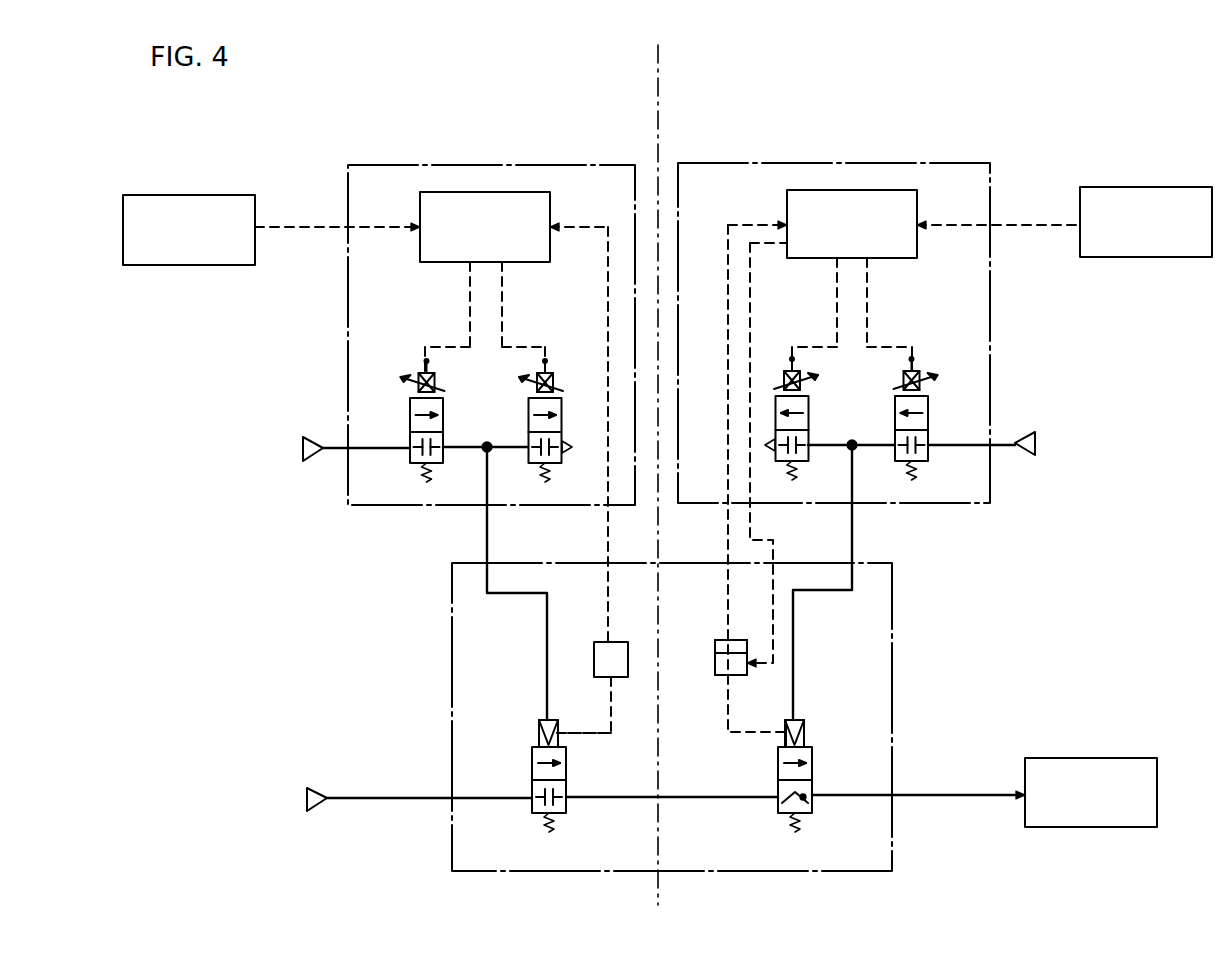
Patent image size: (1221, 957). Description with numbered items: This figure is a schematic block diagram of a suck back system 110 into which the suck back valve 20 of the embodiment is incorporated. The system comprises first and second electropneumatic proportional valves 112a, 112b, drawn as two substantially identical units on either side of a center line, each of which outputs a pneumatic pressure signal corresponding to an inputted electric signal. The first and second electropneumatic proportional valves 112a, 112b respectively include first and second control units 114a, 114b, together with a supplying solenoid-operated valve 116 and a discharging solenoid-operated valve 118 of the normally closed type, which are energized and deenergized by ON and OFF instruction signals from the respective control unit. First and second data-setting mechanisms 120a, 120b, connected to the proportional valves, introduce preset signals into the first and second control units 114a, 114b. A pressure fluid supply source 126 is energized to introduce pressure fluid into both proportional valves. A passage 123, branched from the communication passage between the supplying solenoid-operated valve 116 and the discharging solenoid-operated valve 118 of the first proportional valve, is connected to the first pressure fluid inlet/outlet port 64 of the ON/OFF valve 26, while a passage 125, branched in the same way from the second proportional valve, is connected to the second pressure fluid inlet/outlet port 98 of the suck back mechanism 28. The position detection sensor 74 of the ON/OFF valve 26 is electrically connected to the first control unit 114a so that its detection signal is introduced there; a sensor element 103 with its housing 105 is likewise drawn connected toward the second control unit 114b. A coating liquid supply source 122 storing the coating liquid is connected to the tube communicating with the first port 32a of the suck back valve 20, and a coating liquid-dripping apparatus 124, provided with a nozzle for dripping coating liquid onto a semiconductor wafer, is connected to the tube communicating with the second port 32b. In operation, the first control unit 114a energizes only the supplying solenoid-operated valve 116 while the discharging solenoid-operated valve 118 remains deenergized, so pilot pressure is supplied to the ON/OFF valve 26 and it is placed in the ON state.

The suck back system 110 is at (1162, 83).
The first electropneumatic proportional valve 112a is at (470, 165).
The second electropneumatic proportional valve 112b is at (858, 163).
The first control unit 114a is at (550, 200).
The second control unit 114b is at (787, 198).
The supplying solenoid-operated valve 116 is at (422, 370).
The discharging solenoid-operated valve 118 is at (556, 370).
The first data-setting mechanism 120a is at (232, 195).
The second data-setting mechanism 120b is at (1100, 187).
The coating liquid supply source 122 is at (317, 786).
The passage 123 is at (487, 545).
The coating liquid-dripping apparatus 124 is at (1045, 758).
The passage 125 is at (855, 533).
The pressure fluid supply source 126 is at (315, 463).
The suck back valve 20 is at (893, 620).
The ON/OFF valve 26 is at (535, 745).
The suck back mechanism 28 is at (812, 744).
The first port 32a is at (452, 798).
The second port 32b is at (893, 793).
The first pressure fluid inlet/outlet port 64 is at (546, 720).
The position detection sensor 74 is at (600, 642).
The second pressure fluid inlet/outlet port 98 is at (799, 720).
The second pressure sensor 103 is at (717, 640).
The sensor housing 105 is at (720, 675).